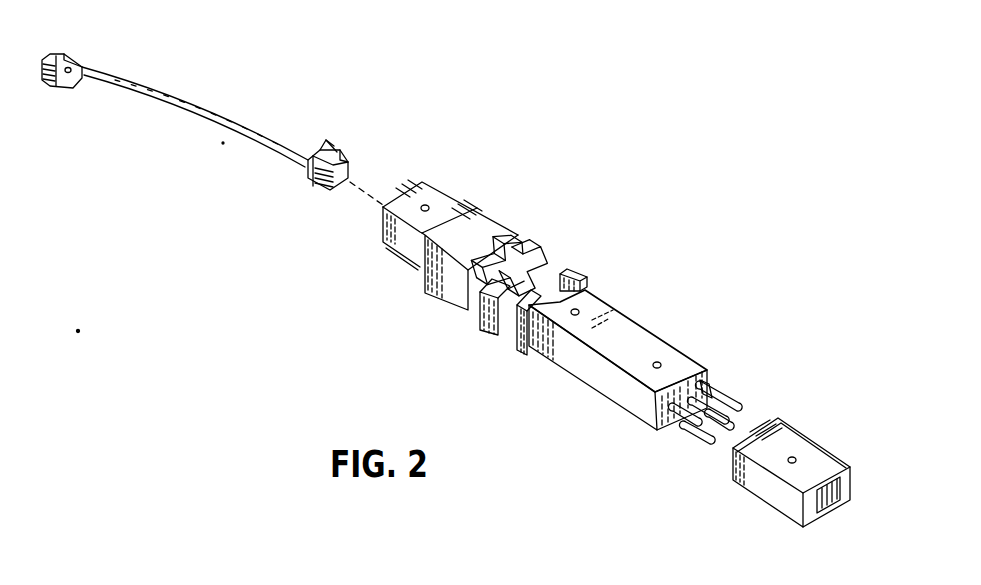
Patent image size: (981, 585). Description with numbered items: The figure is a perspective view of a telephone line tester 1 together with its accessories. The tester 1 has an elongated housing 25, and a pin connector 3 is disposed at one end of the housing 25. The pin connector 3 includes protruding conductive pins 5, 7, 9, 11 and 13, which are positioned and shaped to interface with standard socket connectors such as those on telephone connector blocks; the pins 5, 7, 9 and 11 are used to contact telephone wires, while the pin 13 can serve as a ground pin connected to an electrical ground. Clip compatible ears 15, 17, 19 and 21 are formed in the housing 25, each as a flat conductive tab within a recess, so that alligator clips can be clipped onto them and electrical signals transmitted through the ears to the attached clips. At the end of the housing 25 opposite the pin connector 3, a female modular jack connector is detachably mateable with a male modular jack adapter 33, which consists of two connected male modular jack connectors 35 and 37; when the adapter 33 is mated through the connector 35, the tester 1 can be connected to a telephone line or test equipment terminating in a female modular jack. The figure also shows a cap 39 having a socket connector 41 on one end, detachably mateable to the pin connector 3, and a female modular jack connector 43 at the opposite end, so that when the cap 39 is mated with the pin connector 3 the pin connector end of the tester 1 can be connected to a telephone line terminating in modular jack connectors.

The telephone line tester 1 is at (649, 258).
The pin connector 3 is at (701, 394).
The conductive pin 5 is at (707, 388).
The conductive pin 7 is at (675, 414).
The conductive pin 9 is at (728, 412).
The conductive pin 11 is at (688, 430).
The ground pin 13 is at (724, 432).
The clip compatible ear 15 is at (521, 243).
The clip compatible ear 17 is at (479, 315).
The clip compatible ear 19 is at (558, 273).
The clip compatible ear 21 is at (509, 332).
The housing 25 is at (595, 377).
The male modular jack adapter 33 is at (185, 68).
The male modular jack connector 35 is at (334, 155).
The male modular jack connector 37 is at (70, 65).
The cap 39 is at (813, 429).
The socket connector 41 is at (763, 422).
The female modular jack connector 43 is at (825, 503).